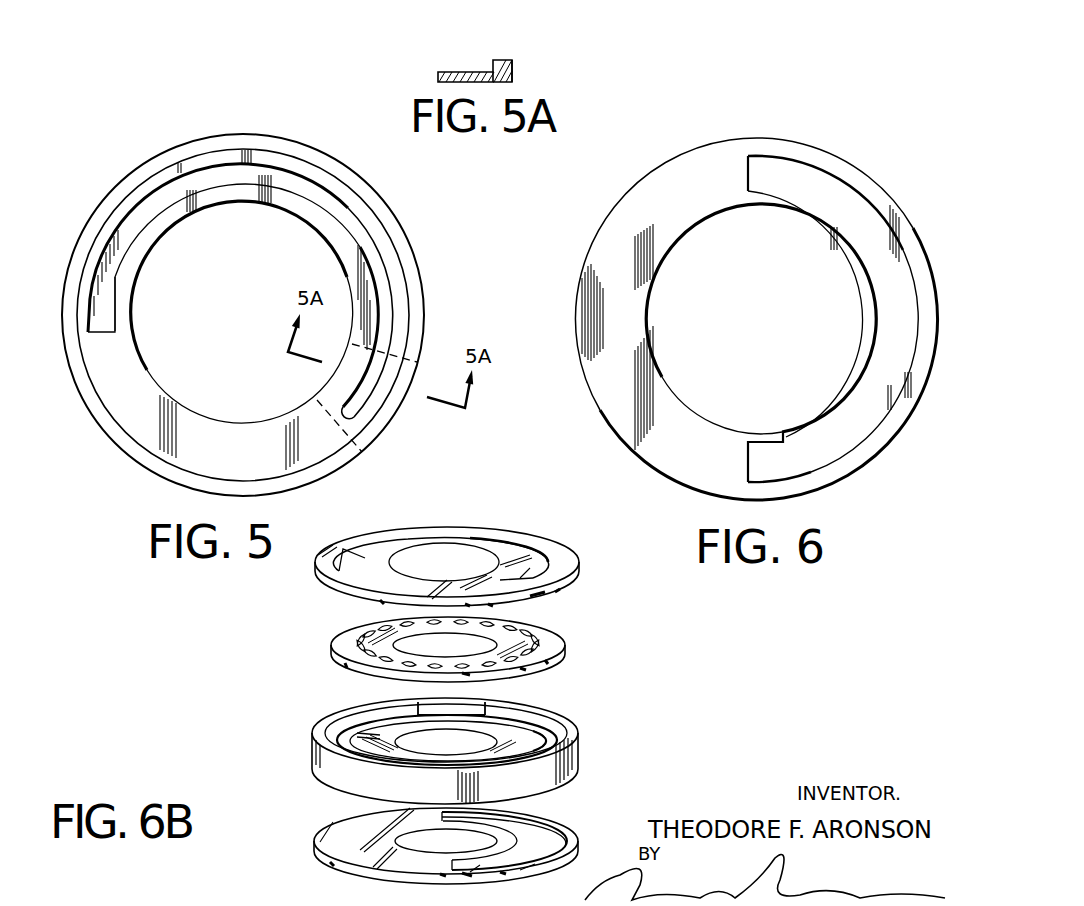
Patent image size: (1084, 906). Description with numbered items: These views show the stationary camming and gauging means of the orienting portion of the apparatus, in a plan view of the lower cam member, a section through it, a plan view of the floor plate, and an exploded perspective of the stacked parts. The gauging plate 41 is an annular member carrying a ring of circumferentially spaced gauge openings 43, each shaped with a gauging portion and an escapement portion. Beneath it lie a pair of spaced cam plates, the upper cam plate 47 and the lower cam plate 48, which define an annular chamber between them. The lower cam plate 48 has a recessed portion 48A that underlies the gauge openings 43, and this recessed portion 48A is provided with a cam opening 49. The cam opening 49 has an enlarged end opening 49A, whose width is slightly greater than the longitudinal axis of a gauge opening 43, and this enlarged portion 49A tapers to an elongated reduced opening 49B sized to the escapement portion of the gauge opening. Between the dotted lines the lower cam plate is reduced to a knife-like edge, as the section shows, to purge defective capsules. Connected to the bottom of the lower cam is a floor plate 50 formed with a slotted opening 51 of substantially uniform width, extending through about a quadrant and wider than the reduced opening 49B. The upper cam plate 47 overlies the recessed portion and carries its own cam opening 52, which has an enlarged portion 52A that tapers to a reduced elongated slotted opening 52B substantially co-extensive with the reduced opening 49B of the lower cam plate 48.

In FIG. 6B, the gauging plate 41 is at (450, 649).
In FIG. 6B, the gauge openings 43 is at (350, 643).
In FIG. 6B, the upper cam plate 47 is at (447, 545).
In FIG. 6B, the lower cam plate 48 is at (445, 736).
In FIG. 5A, the recessed portion 48A is at (456, 72).
In FIG. 5, the recessed portion 48A is at (240, 453).
In FIG. 6B, the recessed portion 48A is at (547, 743).
In FIG. 5, the cam opening 49 is at (210, 291).
In FIG. 6B, the cam opening 49 is at (433, 727).
In FIG. 5, the enlarged end opening 49A is at (90, 332).
In FIG. 6B, the enlarged end opening 49A is at (350, 738).
In FIG. 5A, the elongated reduced opening 49B is at (470, 72).
In FIG. 5, the elongated reduced opening 49B is at (318, 197).
In FIG. 6B, the elongated reduced opening 49B is at (527, 733).
In FIG. 6, the floor plate 50 is at (838, 160).
In FIG. 6B, the floor plate 50 is at (471, 826).
In FIG. 6, the slotted opening 51 is at (748, 178).
In FIG. 6B, the slotted opening 51 is at (543, 833).
In FIG. 6B, the cam opening 52 is at (435, 532).
In FIG. 6B, the enlarged portion 52A is at (358, 567).
In FIG. 6B, the elongated slotted opening 52B is at (487, 543).